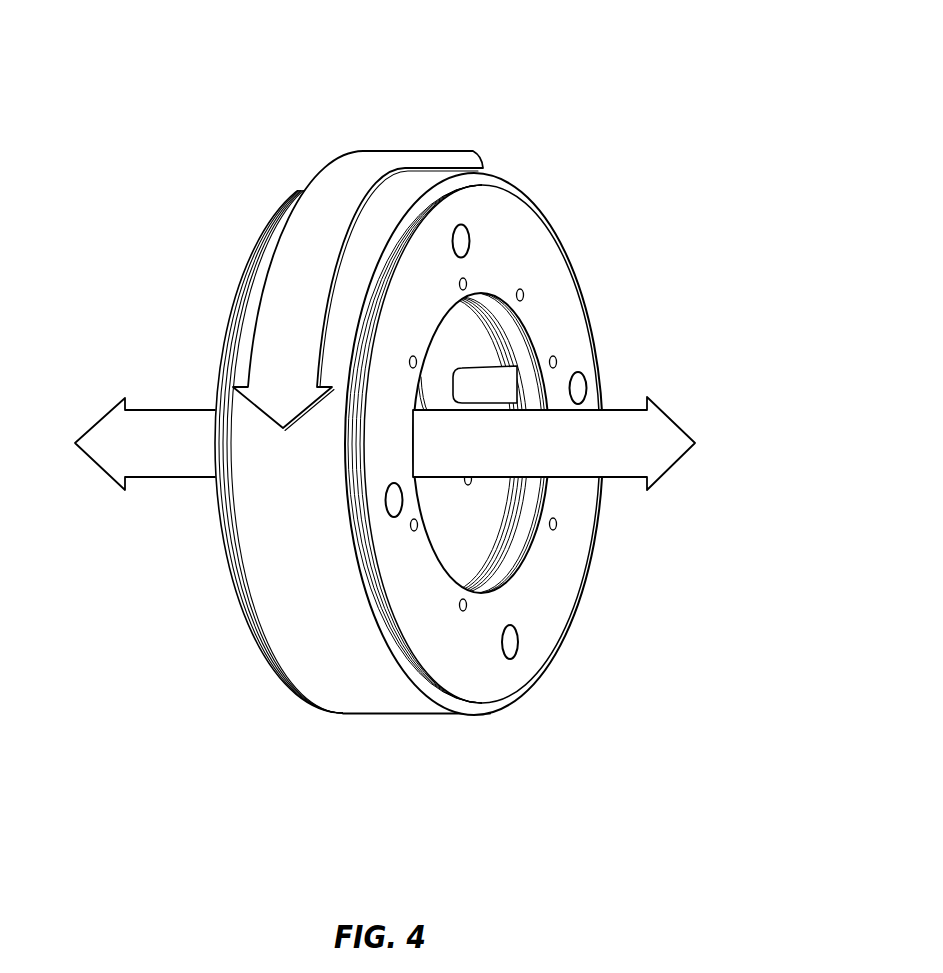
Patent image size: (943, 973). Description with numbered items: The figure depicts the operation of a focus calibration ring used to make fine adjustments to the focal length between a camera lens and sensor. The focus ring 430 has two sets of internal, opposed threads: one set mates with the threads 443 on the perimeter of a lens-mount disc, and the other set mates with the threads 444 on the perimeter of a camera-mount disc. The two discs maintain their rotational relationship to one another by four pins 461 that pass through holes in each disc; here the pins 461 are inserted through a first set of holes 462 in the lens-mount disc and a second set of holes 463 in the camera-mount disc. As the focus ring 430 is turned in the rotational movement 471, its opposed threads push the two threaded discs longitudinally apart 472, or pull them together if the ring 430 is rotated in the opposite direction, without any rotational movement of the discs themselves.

The focus ring 430 is at (360, 693).
The threads on the perimeter of the lens-mount disc 443 is at (465, 700).
The threads on the perimeter of the camera-mount disc 444 is at (242, 606).
The pins 461 is at (500, 385).
The first set of holes 462 is at (510, 658).
The second set of holes 463 is at (463, 370).
The rotational movement 471 is at (412, 151).
The longitudinal movement apart 472 is at (658, 442).